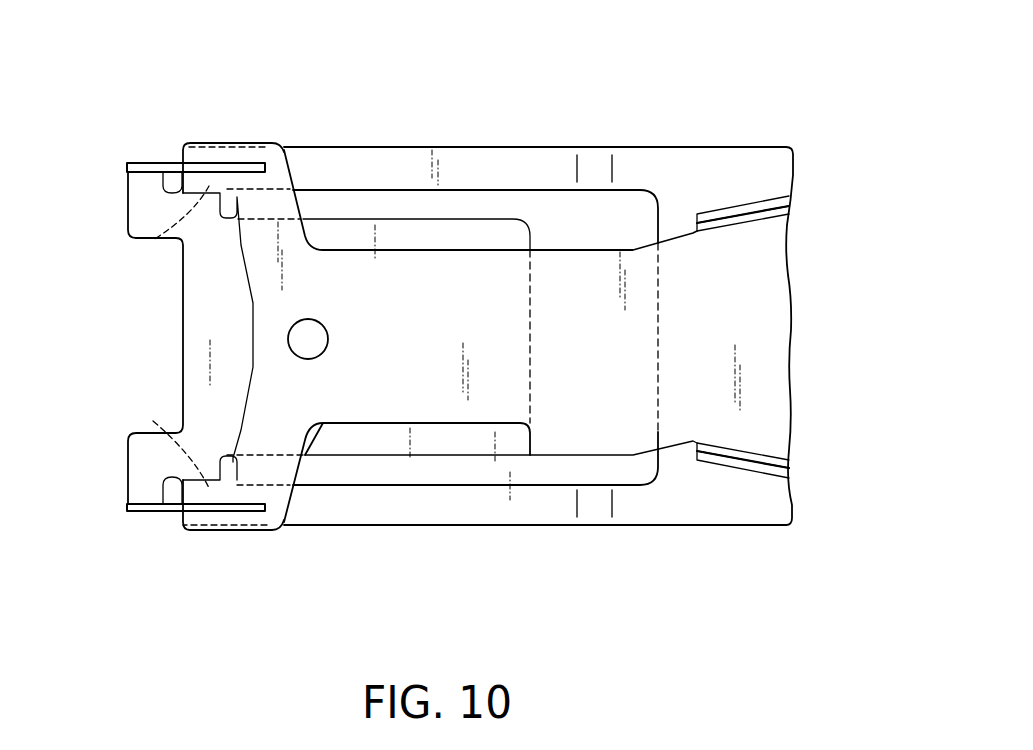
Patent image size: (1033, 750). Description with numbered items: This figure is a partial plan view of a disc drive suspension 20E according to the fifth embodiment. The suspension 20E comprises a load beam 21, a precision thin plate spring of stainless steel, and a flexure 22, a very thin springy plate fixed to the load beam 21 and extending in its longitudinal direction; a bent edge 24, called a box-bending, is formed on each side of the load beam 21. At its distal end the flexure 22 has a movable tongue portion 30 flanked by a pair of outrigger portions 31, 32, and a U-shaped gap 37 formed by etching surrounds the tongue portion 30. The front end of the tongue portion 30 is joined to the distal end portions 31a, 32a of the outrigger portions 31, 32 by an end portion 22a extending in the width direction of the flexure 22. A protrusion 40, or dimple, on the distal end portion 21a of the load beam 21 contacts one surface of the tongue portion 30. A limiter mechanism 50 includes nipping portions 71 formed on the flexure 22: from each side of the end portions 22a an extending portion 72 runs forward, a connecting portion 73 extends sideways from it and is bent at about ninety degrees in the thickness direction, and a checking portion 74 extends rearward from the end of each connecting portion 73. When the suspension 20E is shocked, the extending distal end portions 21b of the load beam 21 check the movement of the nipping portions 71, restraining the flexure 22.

The suspension 20E is at (697, 66).
The load beam 21 is at (770, 313).
The distal end portion of the load beam 21a is at (310, 438).
The extending distal end portions of the load beam 21b is at (197, 157).
The flexure 22 is at (775, 147).
The end portion of the flexure 22a is at (213, 337).
The bent edge 24 is at (720, 217).
The tongue portion 30 is at (530, 236).
The outrigger portion 31 is at (466, 156).
The distal end portion of the outrigger portion 31a is at (265, 142).
The outrigger portion 32 is at (453, 513).
The distal end portion of the outrigger portion 32a is at (267, 532).
The gap 37 is at (573, 449).
The protrusion 40 is at (329, 339).
The limiter mechanism 50 is at (167, 142).
The nipping portion 71 is at (125, 222).
The extending portion 72 is at (137, 194).
The connecting portion 73 is at (136, 162).
The checking portion 74 is at (228, 162).